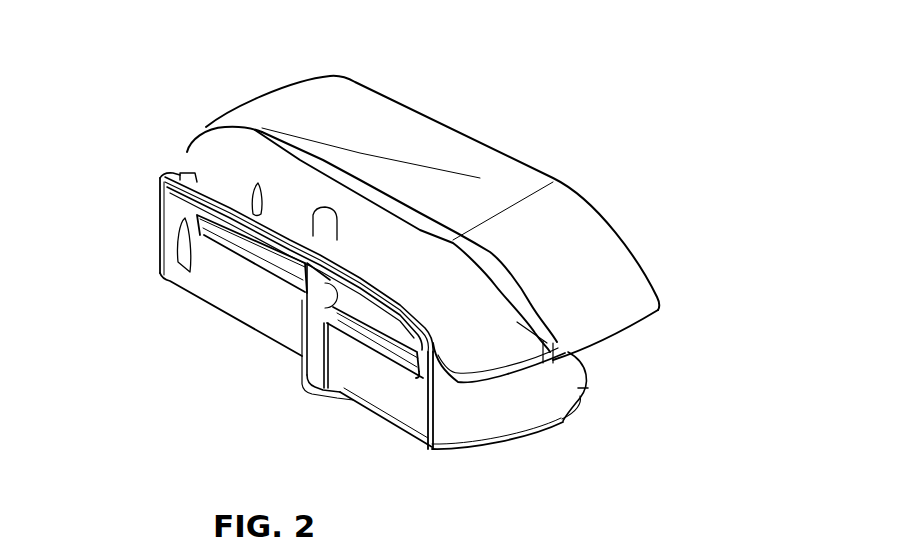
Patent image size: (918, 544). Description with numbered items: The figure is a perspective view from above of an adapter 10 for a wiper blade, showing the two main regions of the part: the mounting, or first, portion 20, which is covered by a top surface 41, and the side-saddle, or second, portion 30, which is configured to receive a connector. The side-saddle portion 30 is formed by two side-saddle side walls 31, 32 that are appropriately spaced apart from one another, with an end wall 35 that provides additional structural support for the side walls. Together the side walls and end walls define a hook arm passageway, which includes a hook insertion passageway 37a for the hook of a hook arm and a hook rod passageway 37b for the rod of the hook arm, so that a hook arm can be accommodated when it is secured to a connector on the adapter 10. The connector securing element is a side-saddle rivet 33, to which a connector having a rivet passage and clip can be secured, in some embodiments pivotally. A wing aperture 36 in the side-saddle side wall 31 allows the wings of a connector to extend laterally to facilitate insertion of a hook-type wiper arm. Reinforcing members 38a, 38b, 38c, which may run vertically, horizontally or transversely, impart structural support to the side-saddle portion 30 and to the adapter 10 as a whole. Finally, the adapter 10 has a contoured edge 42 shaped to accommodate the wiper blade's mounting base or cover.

The adapter 10 is at (398, 263).
The mounting portion 20 is at (463, 167).
The side-saddle portion 30 is at (377, 301).
The side-saddle side wall 31 is at (138, 176).
The side-saddle side wall 32 is at (640, 388).
The side-saddle rivet 33 is at (359, 140).
The end wall 35 is at (527, 446).
The wing aperture 36 is at (123, 204).
The hook insertion passageway 37a is at (177, 135).
The hook rod passageway 37b is at (499, 406).
The reinforcing member 38a is at (249, 342).
The reinforcing member 38b is at (260, 281).
The reinforcing member 38c is at (268, 426).
The top surface 41 is at (597, 233).
The contoured edge 42 is at (631, 428).